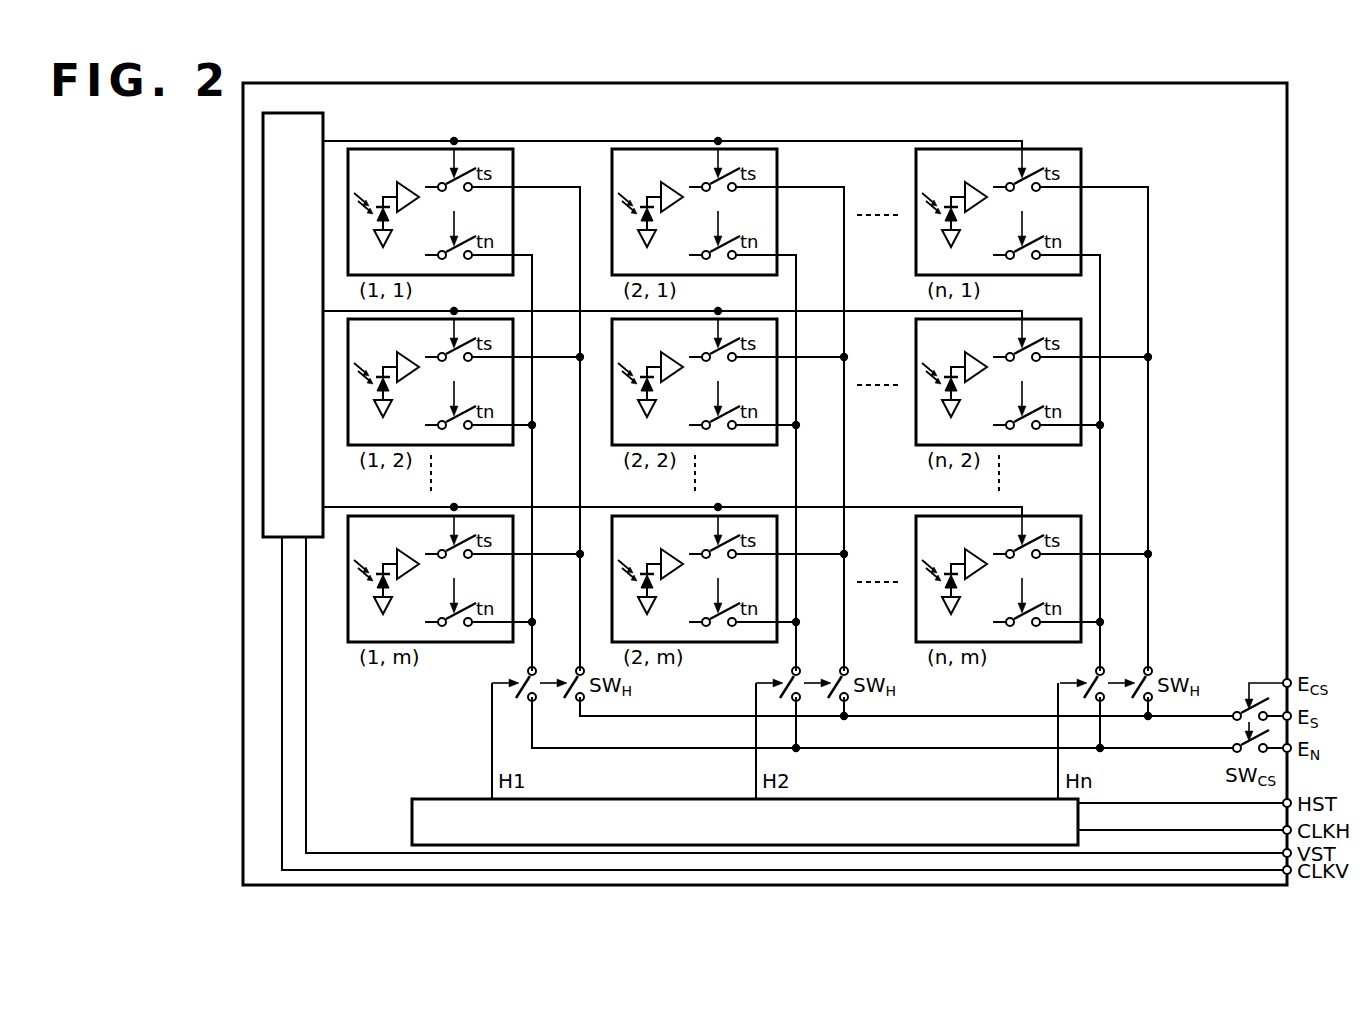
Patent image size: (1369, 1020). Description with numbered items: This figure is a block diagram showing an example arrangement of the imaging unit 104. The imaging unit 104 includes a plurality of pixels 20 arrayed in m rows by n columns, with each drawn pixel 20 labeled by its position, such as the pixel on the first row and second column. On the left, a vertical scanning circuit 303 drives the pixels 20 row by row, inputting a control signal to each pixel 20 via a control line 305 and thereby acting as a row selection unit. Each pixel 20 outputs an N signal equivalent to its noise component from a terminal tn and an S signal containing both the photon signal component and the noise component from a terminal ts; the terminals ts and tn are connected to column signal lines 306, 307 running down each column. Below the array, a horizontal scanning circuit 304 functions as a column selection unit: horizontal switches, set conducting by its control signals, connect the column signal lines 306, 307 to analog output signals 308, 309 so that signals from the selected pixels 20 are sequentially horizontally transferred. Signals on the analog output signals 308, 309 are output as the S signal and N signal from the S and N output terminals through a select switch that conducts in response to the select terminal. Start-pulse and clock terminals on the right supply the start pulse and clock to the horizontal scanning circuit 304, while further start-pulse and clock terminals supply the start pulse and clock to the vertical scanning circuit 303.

The imaging unit 104 is at (212, 197).
The pixel 20 is at (513, 167).
The vertical scanning circuit 303 is at (314, 394).
The horizontal scanning circuit 304 is at (766, 836).
The control line 305 is at (600, 141).
The column signal line 306 is at (1100, 490).
The column signal line 307 is at (1148, 424).
The analog output signal 308 is at (1015, 714).
The analog output signal 309 is at (1013, 751).